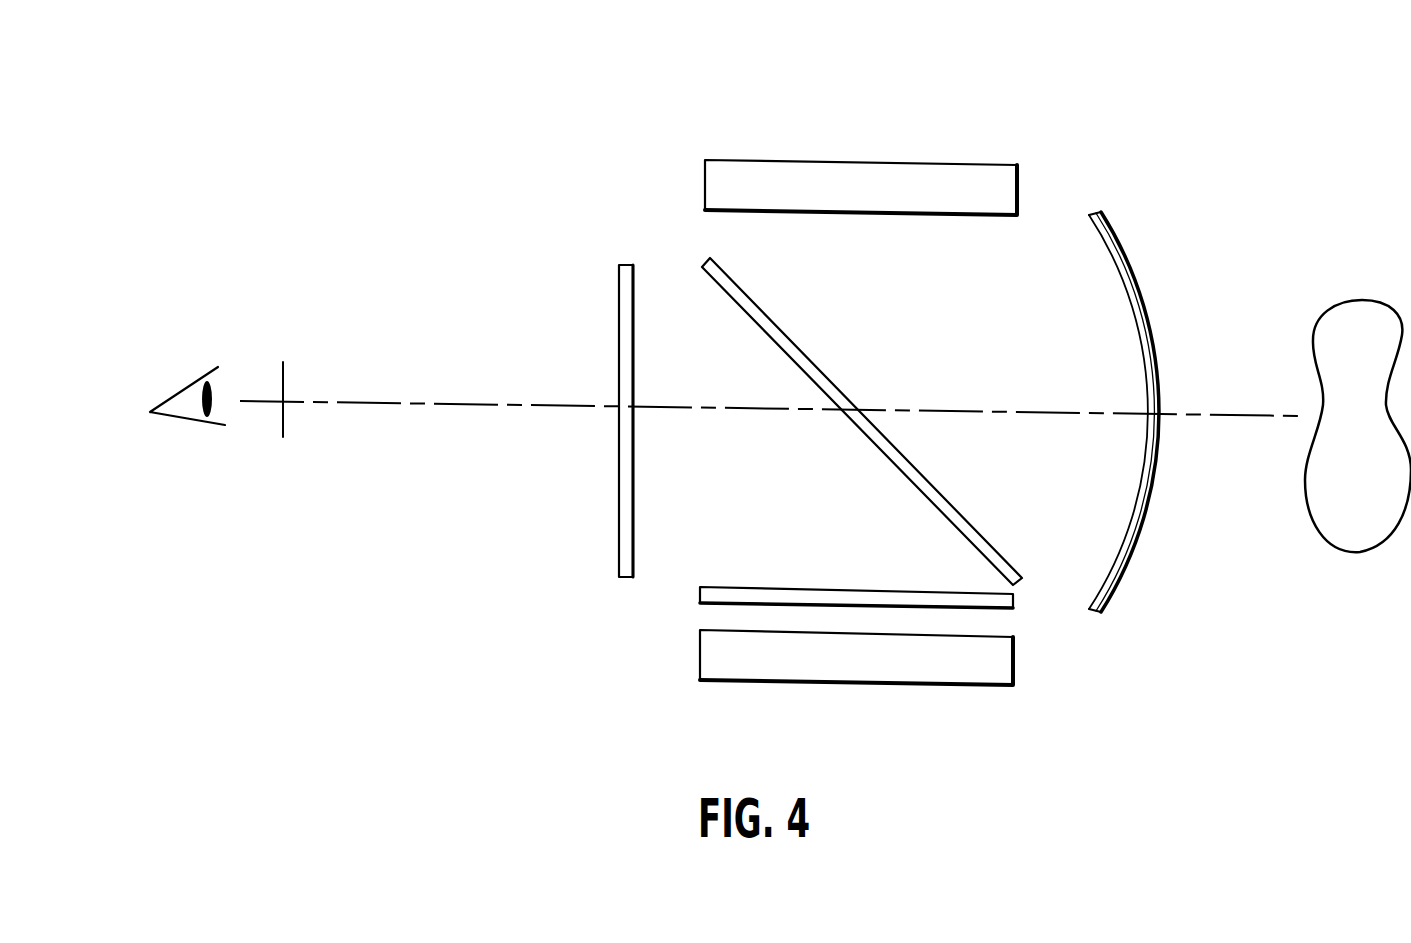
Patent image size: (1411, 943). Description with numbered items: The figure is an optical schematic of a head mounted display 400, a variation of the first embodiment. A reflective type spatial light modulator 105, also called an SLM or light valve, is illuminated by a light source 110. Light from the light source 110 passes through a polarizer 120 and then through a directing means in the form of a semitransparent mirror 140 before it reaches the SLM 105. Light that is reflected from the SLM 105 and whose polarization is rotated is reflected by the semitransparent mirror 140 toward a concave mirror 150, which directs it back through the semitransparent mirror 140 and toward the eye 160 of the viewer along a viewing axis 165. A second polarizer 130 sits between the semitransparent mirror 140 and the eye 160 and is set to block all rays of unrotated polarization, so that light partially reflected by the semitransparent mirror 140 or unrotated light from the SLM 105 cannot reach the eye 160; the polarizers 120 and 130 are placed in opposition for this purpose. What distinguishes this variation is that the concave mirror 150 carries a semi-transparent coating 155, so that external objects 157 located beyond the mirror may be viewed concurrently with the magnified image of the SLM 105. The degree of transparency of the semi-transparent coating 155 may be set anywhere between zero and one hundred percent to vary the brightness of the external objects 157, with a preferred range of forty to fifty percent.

The head mounted display 400 is at (1147, 106).
The reflective type spatial light modulator 105 is at (845, 170).
The light source 110 is at (843, 670).
The polarizer 120 is at (698, 593).
The polarizer 130 is at (620, 578).
The semitransparent mirror 140 is at (700, 263).
The concave mirror 150 is at (1148, 368).
The semi-transparent coating 155 is at (1143, 293).
The external objects 157 is at (1362, 320).
The eye 160 is at (171, 371).
The viewing axis 165 is at (1233, 414).